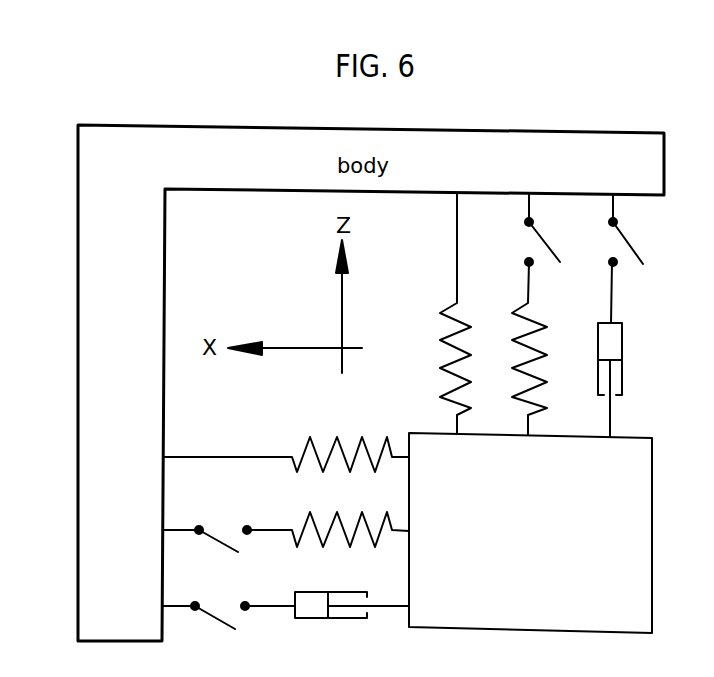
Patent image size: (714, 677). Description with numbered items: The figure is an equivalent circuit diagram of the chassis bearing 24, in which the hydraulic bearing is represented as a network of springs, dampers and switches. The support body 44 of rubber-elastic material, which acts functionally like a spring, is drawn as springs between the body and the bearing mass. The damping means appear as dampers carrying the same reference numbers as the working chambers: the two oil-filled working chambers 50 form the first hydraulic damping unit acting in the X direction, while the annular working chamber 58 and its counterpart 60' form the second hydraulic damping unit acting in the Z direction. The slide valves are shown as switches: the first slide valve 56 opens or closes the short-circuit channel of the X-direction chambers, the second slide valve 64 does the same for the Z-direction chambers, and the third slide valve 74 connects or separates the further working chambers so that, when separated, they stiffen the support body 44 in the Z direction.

The chassis bearing 24 is at (547, 551).
The support body 44 is at (370, 443).
The working chambers 50 is at (320, 613).
The first slide valve 56 is at (218, 625).
The working chamber 58 is at (624, 340).
The damper cylinder 60' is at (648, 398).
The second slide valve 64 is at (630, 237).
The third slide valve 74 is at (551, 237).